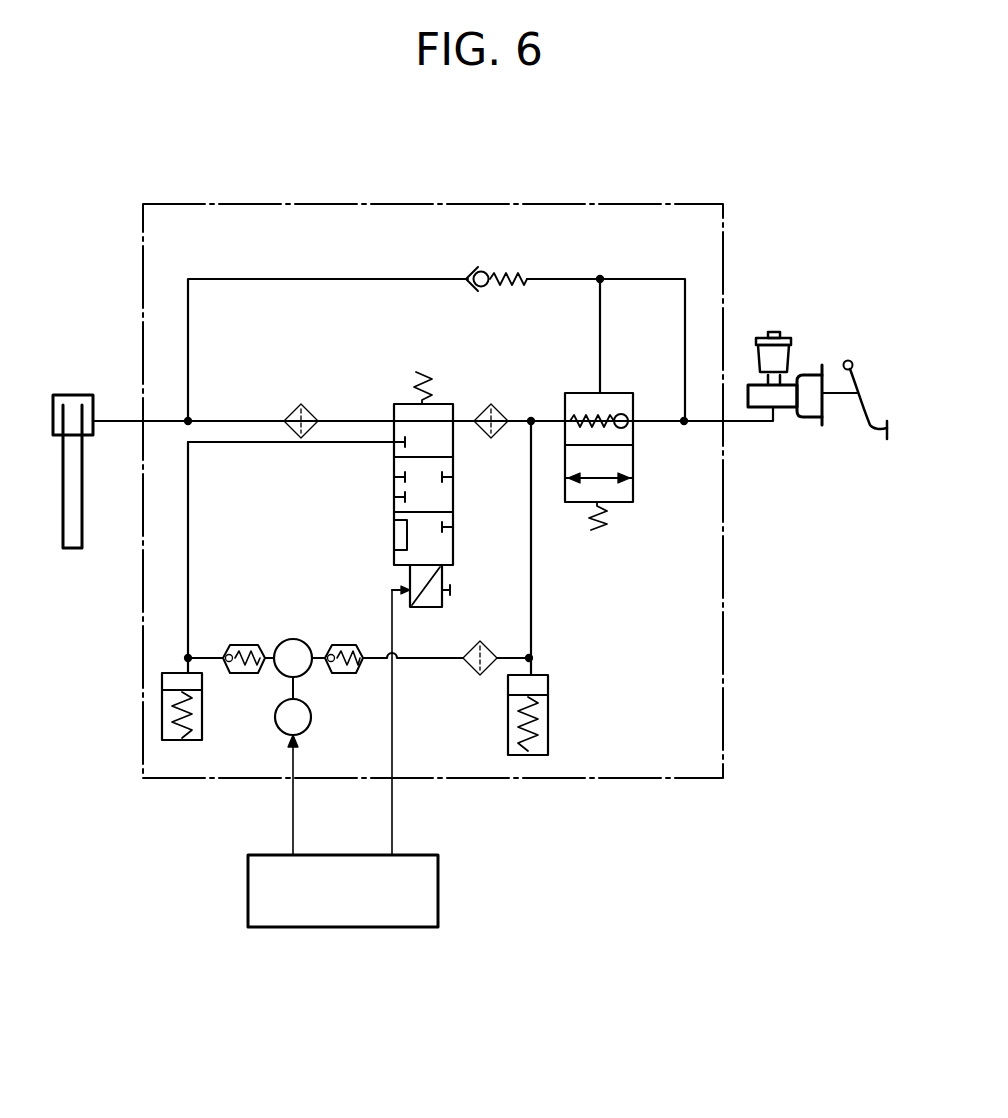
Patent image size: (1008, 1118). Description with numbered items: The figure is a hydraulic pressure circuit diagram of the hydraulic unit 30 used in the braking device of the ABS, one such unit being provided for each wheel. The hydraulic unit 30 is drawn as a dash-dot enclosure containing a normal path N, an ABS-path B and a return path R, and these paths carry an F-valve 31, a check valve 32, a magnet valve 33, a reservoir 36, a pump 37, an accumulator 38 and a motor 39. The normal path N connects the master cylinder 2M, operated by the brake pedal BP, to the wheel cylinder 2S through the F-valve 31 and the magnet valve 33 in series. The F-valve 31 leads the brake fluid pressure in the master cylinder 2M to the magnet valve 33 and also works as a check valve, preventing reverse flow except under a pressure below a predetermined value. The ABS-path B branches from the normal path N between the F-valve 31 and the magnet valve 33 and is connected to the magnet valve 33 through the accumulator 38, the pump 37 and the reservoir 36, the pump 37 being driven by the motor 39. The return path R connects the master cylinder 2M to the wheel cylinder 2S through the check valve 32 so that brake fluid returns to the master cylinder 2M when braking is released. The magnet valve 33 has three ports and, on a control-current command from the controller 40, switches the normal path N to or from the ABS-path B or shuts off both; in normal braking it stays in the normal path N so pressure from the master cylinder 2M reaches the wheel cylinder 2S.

The wheel cylinder 2S is at (75, 393).
The master cylinder 2M is at (783, 408).
The brake pedal BP is at (872, 436).
The normal path N is at (240, 417).
The return path R is at (399, 278).
The ABS-path B is at (189, 580).
The hydraulic unit 30 is at (566, 782).
The F-valve 31 is at (633, 460).
The check valve 32 is at (497, 277).
The magnet valve 33 is at (394, 488).
The reservoir 36 is at (203, 712).
The pump 37 is at (308, 640).
The accumulator 38 is at (549, 718).
The motor 39 is at (312, 717).
The controller 40 is at (438, 886).